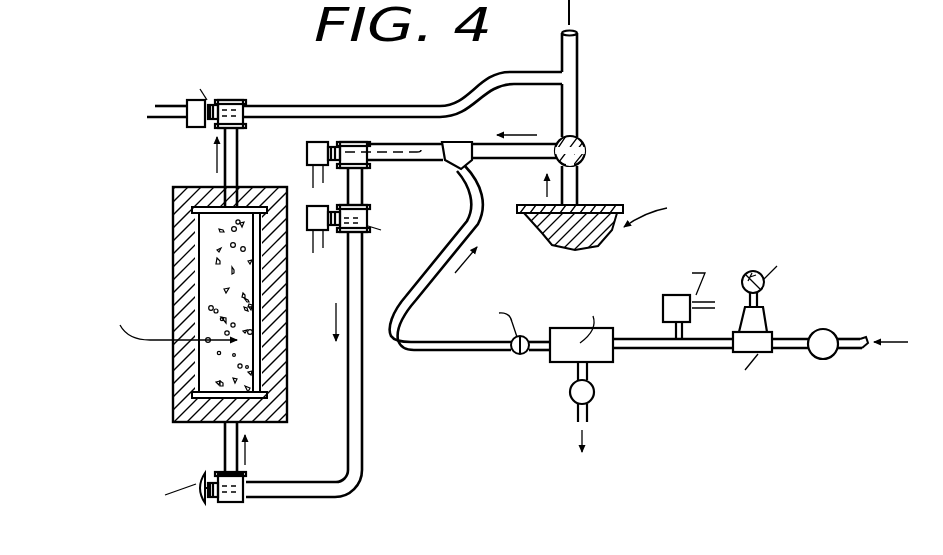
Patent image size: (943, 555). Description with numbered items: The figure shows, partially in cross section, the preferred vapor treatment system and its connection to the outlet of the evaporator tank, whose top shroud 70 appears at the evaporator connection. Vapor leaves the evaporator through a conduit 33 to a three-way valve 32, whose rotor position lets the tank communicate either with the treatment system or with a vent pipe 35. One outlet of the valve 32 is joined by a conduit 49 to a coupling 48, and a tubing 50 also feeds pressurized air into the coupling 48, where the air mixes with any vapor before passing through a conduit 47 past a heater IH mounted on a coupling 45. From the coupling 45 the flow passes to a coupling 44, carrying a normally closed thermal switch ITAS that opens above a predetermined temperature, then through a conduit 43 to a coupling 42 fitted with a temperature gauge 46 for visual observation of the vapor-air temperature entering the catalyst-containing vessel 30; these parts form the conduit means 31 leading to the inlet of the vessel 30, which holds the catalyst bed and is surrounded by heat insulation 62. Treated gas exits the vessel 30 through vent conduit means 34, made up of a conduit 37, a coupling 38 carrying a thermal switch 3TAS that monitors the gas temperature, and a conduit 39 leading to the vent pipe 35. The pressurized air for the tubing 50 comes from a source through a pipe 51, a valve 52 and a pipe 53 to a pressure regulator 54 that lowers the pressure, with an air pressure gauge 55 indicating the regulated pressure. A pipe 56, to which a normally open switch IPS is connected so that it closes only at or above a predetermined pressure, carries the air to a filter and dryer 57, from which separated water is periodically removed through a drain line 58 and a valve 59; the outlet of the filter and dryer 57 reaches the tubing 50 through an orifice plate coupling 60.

The catalyst-containing vessel 30 is at (200, 248).
The conduit means 31 is at (362, 499).
The 3-way valve 32 is at (583, 140).
The conduit 33 is at (578, 173).
The vent conduit means 34 is at (303, 89).
The vent pipe 35 is at (578, 81).
The conduit 37 is at (236, 152).
The coupling 38 is at (243, 101).
The conduit 39 is at (443, 104).
The coupling 42 is at (235, 504).
The conduit 43 is at (366, 421).
The coupling 44 is at (368, 233).
The coupling 45 is at (352, 142).
The temperature gauge 46 is at (198, 503).
The conduit 47 is at (422, 143).
The coupling 48 is at (458, 139).
The conduit 49 is at (483, 161).
The tubing 50 is at (476, 216).
The pipe 51 is at (845, 349).
The valve 52 is at (830, 331).
The pipe 53 is at (779, 337).
The pressure regulator 54 is at (733, 353).
The air pressure gauge 55 is at (752, 272).
The pipe 56 is at (640, 351).
The filter and dryer 57 is at (552, 357).
The drain line 58 is at (582, 367).
The valve 59 is at (591, 400).
The orifice plate coupling 60 is at (513, 352).
The heat insulation 62 is at (173, 201).
The top shroud 70 is at (613, 201).
The thermal switch 3TAS is at (194, 128).
The normally closed thermal switch ITAS is at (308, 221).
The heater IH is at (415, 142).
The normally open switch IPS is at (663, 310).